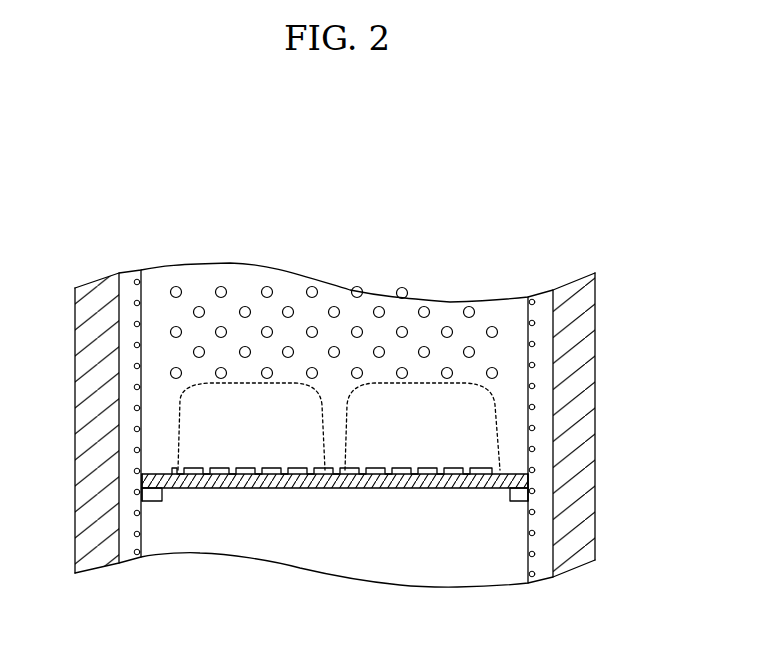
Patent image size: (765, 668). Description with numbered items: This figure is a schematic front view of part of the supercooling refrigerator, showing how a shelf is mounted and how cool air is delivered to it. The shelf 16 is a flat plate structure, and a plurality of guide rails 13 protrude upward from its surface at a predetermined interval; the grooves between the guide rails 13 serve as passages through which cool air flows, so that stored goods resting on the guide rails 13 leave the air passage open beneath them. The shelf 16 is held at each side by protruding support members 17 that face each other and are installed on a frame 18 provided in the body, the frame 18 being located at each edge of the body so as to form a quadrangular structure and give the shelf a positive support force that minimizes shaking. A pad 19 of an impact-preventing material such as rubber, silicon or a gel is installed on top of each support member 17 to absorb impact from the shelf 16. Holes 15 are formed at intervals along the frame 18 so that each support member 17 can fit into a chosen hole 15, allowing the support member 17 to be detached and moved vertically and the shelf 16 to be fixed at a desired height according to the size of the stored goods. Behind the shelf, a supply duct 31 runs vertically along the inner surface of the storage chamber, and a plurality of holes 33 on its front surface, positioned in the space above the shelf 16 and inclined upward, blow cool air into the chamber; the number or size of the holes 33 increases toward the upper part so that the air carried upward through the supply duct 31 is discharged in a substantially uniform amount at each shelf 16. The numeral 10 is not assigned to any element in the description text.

The housing wall 10 is at (577, 356).
The guide rail 13 is at (490, 464).
The hole 15 is at (528, 388).
The shelf 16 is at (258, 489).
The support member 17 is at (145, 497).
The frame 18 is at (127, 527).
The pad 19 is at (142, 489).
The supply duct 31 is at (288, 284).
The hole 33 is at (357, 328).